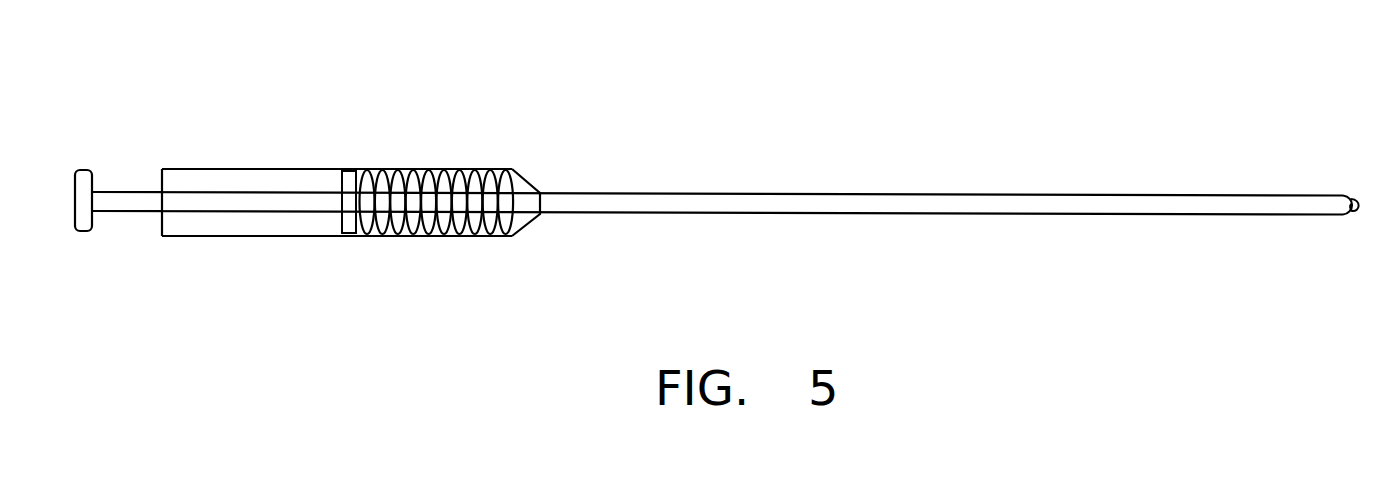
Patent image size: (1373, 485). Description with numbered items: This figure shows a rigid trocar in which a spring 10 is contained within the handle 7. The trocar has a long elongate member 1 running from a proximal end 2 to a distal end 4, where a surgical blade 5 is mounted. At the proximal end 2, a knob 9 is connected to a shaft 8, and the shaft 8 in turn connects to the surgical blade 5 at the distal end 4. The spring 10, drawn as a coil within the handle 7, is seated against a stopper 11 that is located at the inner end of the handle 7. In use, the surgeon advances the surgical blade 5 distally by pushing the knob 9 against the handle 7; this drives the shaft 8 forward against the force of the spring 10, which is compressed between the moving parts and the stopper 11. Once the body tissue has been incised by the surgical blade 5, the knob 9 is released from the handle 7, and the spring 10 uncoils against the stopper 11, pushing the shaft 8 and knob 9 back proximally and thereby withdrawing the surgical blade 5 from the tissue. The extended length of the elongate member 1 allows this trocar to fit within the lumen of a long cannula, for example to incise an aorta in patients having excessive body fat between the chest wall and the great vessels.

The elongate member 1 is at (876, 193).
The proximal end 2 is at (180, 168).
The distal end 4 is at (1327, 194).
The surgical blade 5 is at (1356, 212).
The handle 7 is at (470, 237).
The shaft 8 is at (121, 212).
The knob 9 is at (83, 168).
The spring 10 is at (388, 168).
The stopper 11 is at (347, 168).